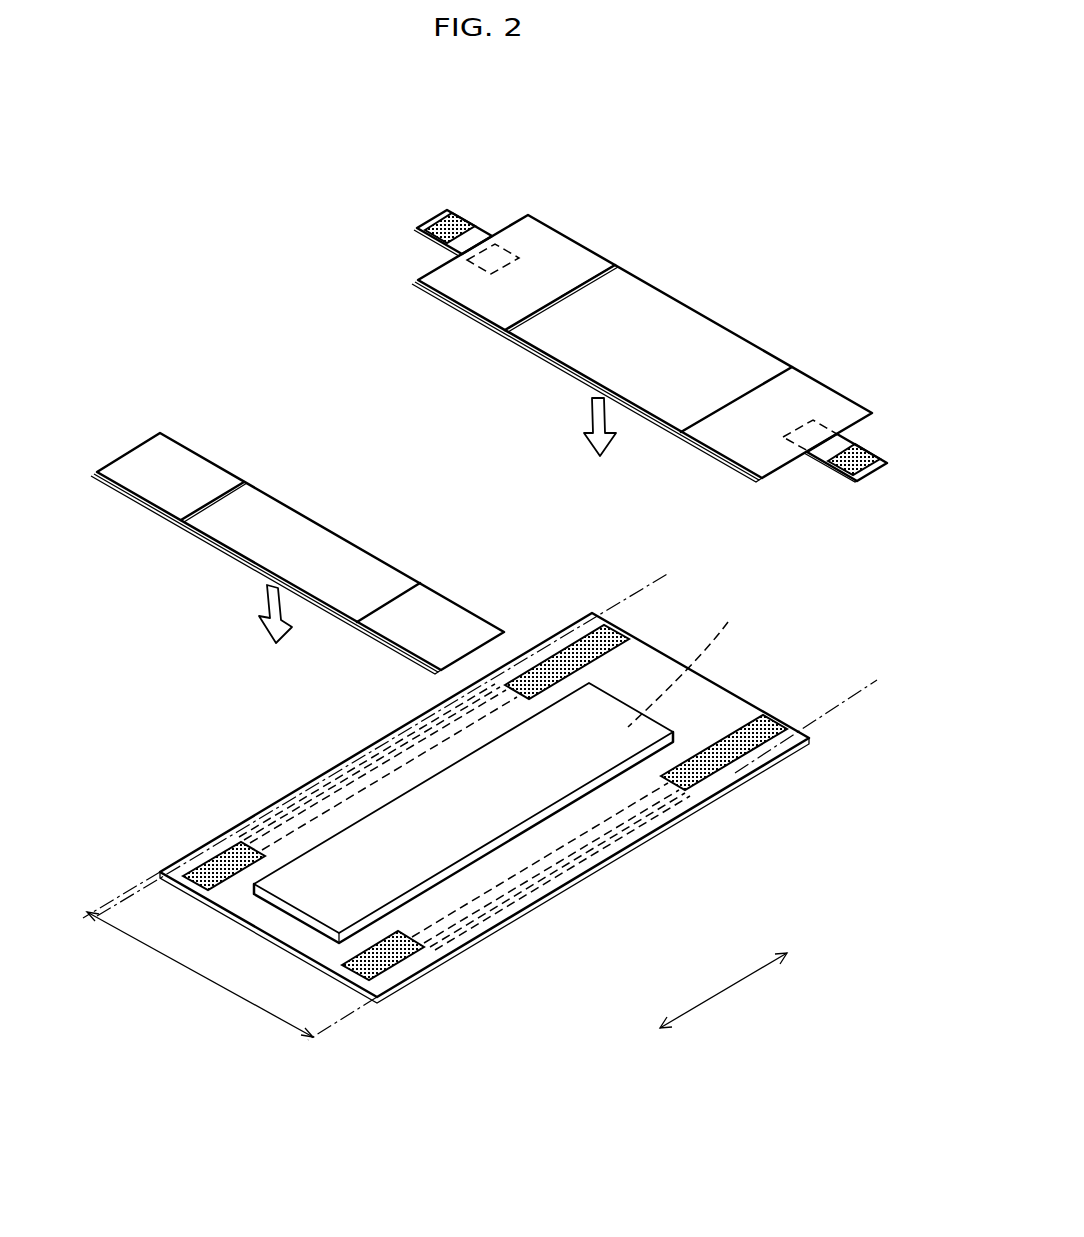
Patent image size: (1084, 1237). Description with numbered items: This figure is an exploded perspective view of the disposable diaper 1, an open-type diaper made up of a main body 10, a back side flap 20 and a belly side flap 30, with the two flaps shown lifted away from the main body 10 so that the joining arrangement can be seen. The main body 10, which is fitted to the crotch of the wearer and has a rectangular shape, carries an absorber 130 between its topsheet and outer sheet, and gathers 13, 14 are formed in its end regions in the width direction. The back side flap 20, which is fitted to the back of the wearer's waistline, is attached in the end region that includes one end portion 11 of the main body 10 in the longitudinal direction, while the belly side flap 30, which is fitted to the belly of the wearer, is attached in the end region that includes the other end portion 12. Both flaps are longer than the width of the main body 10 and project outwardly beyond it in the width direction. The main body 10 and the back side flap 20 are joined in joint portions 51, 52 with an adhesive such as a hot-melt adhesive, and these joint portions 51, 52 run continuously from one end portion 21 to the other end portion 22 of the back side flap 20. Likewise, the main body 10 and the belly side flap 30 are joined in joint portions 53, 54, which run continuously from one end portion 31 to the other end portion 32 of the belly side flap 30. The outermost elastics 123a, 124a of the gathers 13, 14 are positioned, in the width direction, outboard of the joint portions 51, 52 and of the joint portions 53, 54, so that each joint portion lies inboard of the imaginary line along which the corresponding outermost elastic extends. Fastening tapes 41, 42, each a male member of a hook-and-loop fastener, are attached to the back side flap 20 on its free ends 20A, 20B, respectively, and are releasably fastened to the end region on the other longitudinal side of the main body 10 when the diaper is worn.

The disposable diaper 1 is at (264, 192).
The main body 10 is at (378, 863).
The end portion 11 is at (748, 702).
The other end portion 12 is at (273, 930).
The gather 13 is at (622, 815).
The gather 14 is at (398, 757).
The outermost elastic 123a is at (547, 887).
The outermost elastic 124a is at (268, 803).
The absorber 130 is at (688, 660).
The back side flap 20 is at (707, 357).
The free end 20A is at (813, 393).
The free end 20B is at (560, 257).
The end portion 21 is at (653, 290).
The other end portion 22 is at (557, 367).
The belly side flap 30 is at (297, 527).
The end portion 31 is at (363, 550).
The other end portion 32 is at (237, 553).
The fastening tape 41 is at (840, 450).
The fastening tape 42 is at (476, 237).
The joint portion 51 is at (767, 734).
The joint portion 52 is at (608, 635).
The joint portion 53 is at (408, 962).
The joint portion 54 is at (208, 870).